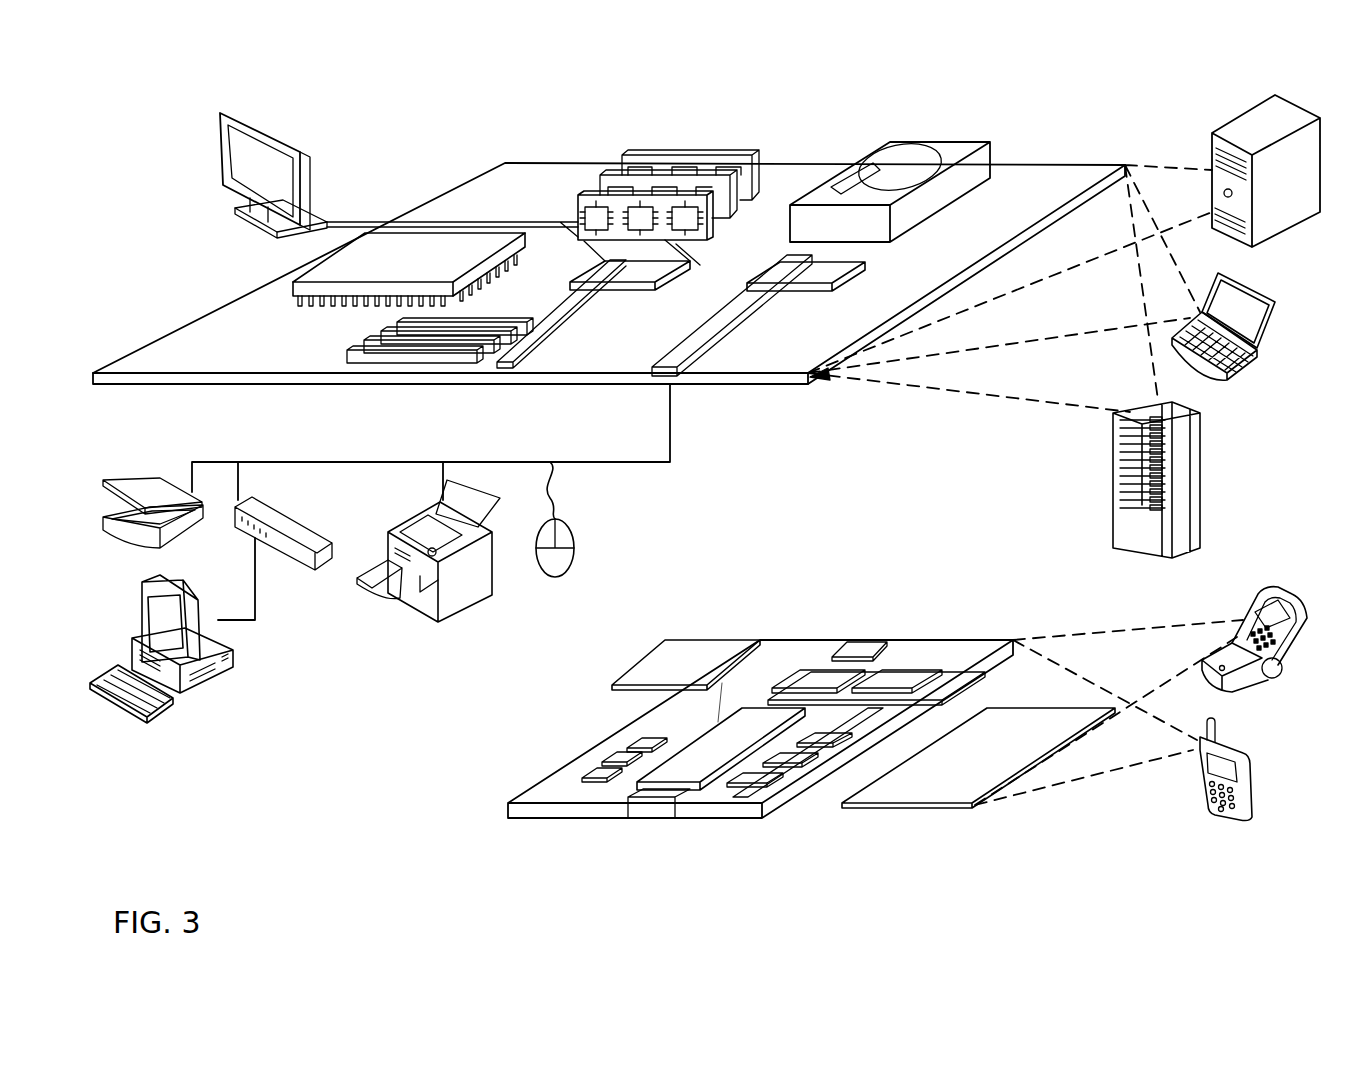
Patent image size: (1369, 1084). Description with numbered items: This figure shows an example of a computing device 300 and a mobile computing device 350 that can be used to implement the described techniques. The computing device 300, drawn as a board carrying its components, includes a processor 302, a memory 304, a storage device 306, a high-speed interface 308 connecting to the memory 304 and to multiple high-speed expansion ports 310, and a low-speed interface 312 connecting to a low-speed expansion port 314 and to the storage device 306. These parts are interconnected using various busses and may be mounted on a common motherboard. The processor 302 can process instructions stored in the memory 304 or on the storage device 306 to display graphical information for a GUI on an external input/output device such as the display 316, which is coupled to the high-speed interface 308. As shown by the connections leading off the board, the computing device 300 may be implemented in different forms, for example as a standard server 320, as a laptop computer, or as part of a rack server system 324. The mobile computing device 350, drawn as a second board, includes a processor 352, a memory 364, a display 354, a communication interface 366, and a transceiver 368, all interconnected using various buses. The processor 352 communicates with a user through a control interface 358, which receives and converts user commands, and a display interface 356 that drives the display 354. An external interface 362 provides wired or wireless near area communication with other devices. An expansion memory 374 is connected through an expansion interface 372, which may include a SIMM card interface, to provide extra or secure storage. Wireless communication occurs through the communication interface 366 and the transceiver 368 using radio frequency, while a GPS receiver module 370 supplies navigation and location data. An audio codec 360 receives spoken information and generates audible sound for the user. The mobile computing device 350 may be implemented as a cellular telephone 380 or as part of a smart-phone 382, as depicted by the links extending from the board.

The computing device 300 is at (428, 140).
The processor 302 is at (300, 284).
The memory 304 is at (636, 157).
The storage device 306 is at (880, 146).
The high-speed interface 308 is at (598, 275).
The high-speed expansion ports 310 is at (360, 345).
The low-speed interface 312 is at (787, 273).
The low-speed expansion port 314 is at (690, 382).
The display 316 is at (222, 108).
The standard server 320 is at (1210, 148).
The rack server system 324 is at (1113, 500).
The mobile computing device 350 is at (485, 813).
The processor 352 is at (692, 770).
The display 354 is at (938, 790).
The display interface 356 is at (765, 780).
The control interface 358 is at (805, 768).
The audio codec 360 is at (823, 735).
The external interface 362 is at (653, 805).
The memory 364 is at (600, 763).
The communication interface 366 is at (817, 685).
The transceiver 368 is at (897, 682).
The GPS receiver module 370 is at (872, 645).
The expansion interface 372 is at (745, 653).
The expansion memory 374 is at (667, 652).
The cellular telephone 380 is at (1260, 596).
The smart-phone 382 is at (1200, 780).